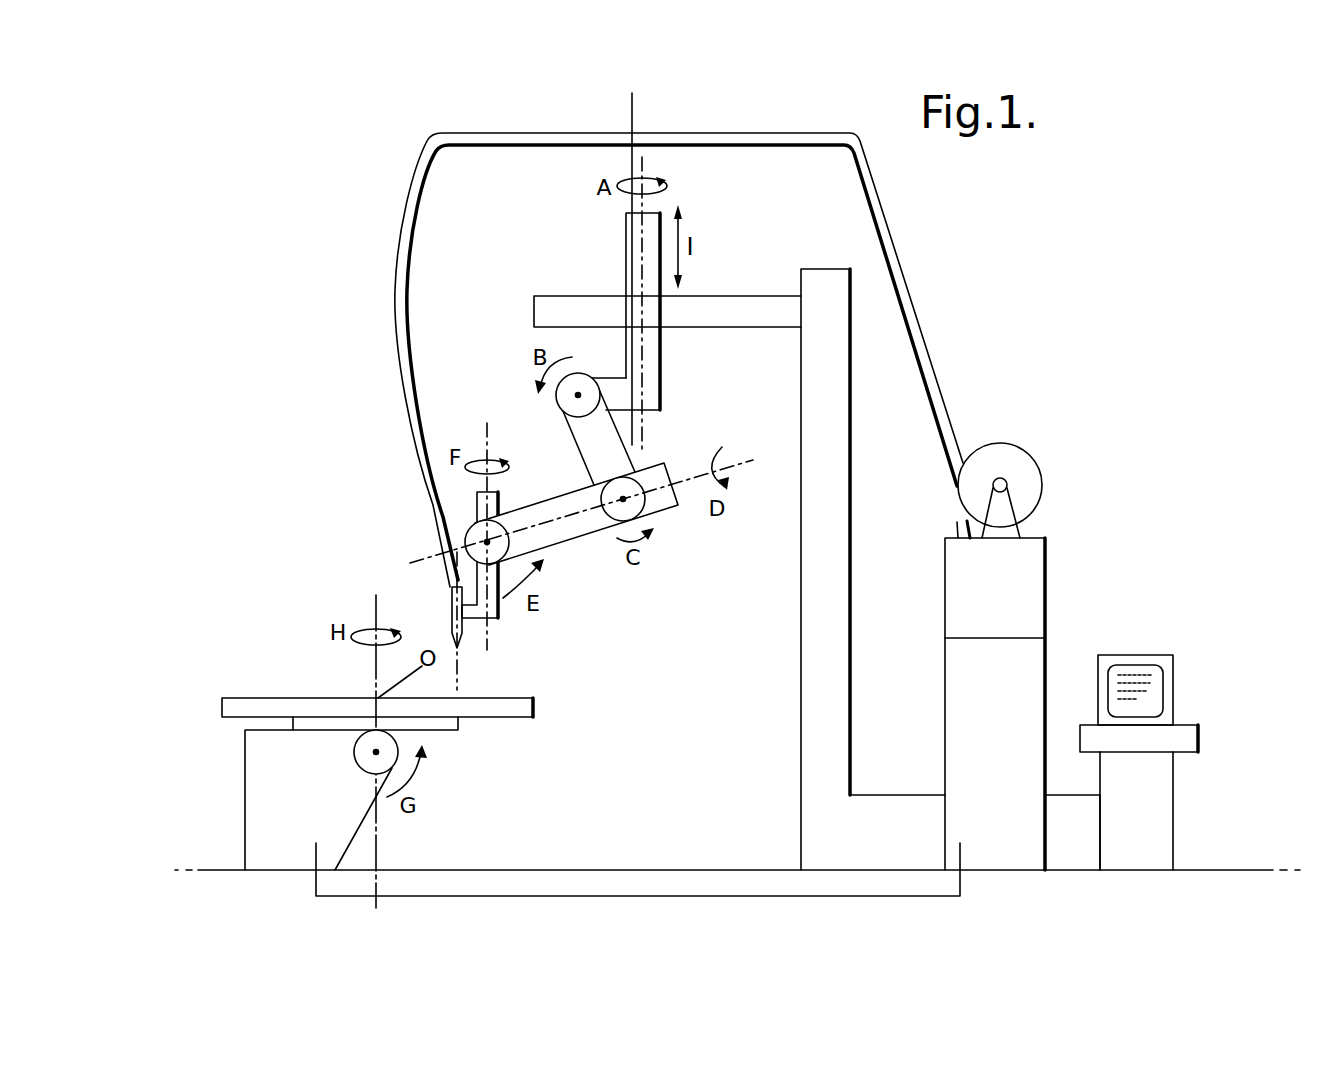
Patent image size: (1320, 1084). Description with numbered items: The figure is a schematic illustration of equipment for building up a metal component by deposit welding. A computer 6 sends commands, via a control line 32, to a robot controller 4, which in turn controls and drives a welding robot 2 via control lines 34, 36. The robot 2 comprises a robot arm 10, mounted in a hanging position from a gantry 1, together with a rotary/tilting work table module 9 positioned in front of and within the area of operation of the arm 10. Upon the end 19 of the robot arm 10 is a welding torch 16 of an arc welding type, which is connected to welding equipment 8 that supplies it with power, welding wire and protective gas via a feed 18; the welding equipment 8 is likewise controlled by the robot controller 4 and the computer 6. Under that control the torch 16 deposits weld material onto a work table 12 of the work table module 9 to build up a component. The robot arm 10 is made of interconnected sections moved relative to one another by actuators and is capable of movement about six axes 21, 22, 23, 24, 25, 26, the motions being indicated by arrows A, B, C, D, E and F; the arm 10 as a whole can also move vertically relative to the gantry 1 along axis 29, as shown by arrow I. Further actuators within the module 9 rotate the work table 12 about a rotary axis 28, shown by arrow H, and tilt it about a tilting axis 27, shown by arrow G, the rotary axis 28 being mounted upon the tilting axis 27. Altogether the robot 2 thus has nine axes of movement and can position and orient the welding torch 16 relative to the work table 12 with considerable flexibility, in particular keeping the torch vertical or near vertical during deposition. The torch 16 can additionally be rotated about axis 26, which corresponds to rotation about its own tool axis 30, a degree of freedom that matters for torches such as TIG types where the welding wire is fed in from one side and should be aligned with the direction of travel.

The gantry 1 is at (751, 305).
The welding robot 2 is at (226, 278).
The robot controller 4 is at (1030, 667).
The computer 6 is at (1173, 687).
The welding equipment 8 is at (1027, 580).
The rotary/tilting work table module 9 is at (460, 804).
The robot arm 10 is at (698, 620).
The work table 12 is at (233, 703).
The welding torch 16 is at (452, 625).
The feed 18 is at (397, 287).
The end of the robot arm 19 is at (497, 625).
The axis 21 is at (668, 195).
The axis 22 is at (579, 394).
The axis 23 is at (625, 497).
The axis 24 is at (733, 455).
The axis 25 is at (489, 540).
The axis 26 is at (480, 445).
The tilting axis 27 is at (374, 754).
The rotary axis 28 is at (372, 655).
The axis 29 is at (635, 123).
The tool axis 30 is at (457, 665).
The control line 32 is at (1068, 797).
The control line 34 is at (898, 793).
The control line 36 is at (787, 897).